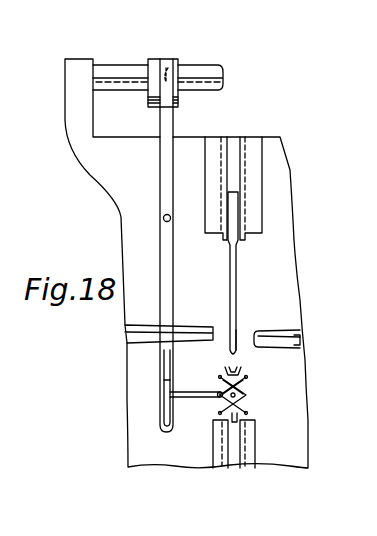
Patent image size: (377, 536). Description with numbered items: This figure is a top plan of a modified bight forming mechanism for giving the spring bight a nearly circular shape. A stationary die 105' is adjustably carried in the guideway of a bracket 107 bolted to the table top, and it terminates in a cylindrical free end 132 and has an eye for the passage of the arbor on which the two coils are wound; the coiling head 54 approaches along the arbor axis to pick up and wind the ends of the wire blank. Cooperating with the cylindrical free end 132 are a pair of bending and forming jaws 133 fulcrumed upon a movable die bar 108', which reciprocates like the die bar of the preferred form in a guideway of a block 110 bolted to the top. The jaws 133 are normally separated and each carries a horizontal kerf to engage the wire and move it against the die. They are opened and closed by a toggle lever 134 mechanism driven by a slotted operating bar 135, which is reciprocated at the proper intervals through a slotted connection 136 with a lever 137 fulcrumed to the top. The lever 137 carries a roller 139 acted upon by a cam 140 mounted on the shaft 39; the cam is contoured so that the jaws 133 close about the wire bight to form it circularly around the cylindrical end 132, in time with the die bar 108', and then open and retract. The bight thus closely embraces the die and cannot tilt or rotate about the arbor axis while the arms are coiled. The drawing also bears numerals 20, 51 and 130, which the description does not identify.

The housing body 20 is at (280, 137).
The shaft 39 is at (112, 65).
The roller 139 is at (175, 72).
The cam 140 is at (164, 52).
The lever 137 is at (160, 273).
The pivot hole 130 is at (163, 218).
The slotted connection 136 is at (165, 383).
The slotted operating bar 135 is at (198, 398).
The bracket 107 is at (262, 165).
The stationary die 105' is at (256, 273).
The cylindrical free end 132 is at (240, 345).
The coiling head 54 is at (192, 325).
The side wall 51 is at (300, 340).
The bending and forming jaws 133 is at (243, 370).
The toggle lever 134 is at (247, 390).
The movable die bar 108' is at (265, 409).
The block 110 is at (255, 437).